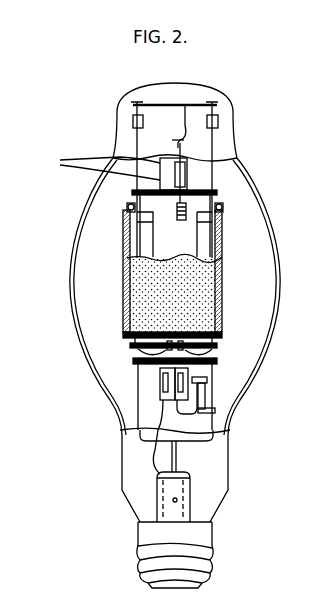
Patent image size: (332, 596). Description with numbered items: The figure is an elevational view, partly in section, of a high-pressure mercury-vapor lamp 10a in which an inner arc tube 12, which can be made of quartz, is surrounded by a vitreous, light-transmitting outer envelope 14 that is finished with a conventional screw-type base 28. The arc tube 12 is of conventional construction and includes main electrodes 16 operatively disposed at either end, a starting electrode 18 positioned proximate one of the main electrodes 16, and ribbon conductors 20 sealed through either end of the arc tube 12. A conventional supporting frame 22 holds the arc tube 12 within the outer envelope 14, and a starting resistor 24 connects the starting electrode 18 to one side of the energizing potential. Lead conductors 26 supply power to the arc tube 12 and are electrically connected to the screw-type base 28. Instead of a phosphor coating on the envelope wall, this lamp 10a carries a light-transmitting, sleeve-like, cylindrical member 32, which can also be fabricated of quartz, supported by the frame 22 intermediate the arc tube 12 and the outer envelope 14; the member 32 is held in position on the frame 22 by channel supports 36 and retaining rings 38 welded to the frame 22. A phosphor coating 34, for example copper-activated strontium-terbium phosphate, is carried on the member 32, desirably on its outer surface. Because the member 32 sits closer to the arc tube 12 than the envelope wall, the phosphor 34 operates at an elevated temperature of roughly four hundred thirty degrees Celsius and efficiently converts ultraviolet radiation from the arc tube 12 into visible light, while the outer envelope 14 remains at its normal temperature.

The lamp 10a is at (235, 134).
The arc tube 12 is at (187, 240).
The outer envelope 14 is at (275, 319).
The main electrodes 16 is at (125, 228).
The starting electrode 18 is at (217, 355).
The ribbon conductors 20 is at (215, 172).
The supporting frame 22 is at (113, 142).
The starting resistor 24 is at (207, 393).
The lead conductors 26 is at (190, 462).
The screw-type base 28 is at (200, 532).
The cylindrical member 32 is at (223, 253).
The coating 34 is at (125, 242).
The channel supports 36 is at (225, 216).
The retaining rings 38 is at (130, 347).